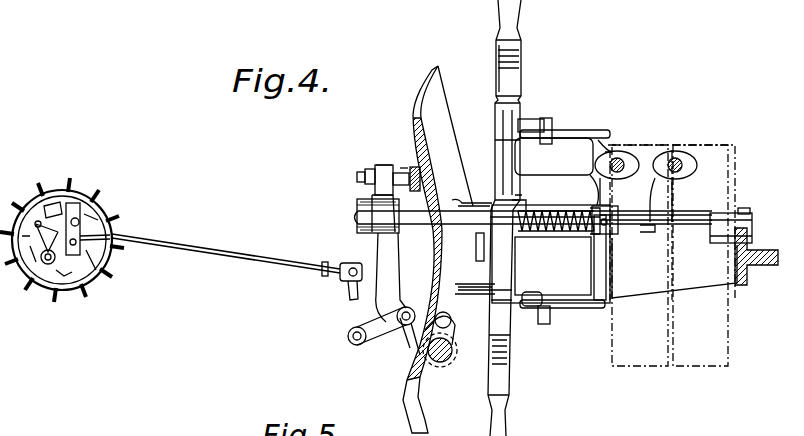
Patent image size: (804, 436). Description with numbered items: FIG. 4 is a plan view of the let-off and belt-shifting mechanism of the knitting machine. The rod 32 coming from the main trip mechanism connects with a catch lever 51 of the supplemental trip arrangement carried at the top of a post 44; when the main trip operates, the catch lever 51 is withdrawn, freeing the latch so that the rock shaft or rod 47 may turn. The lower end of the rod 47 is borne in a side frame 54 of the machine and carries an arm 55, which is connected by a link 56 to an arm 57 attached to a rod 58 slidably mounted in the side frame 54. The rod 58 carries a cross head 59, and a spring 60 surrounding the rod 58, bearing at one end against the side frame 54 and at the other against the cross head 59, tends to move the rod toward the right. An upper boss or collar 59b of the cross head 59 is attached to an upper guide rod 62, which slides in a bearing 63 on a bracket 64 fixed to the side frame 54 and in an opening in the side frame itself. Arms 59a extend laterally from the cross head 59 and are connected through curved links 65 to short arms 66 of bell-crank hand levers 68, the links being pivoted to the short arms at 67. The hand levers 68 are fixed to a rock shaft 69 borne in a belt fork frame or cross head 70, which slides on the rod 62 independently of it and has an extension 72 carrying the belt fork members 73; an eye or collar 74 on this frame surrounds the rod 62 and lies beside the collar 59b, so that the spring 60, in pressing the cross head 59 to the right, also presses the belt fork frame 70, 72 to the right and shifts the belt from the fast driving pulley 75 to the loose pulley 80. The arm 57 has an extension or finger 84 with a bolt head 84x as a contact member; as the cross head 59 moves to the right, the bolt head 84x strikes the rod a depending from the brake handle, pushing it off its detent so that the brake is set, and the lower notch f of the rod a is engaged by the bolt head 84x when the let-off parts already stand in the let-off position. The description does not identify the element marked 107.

The rod 32 is at (266, 266).
The post 44 is at (472, 300).
The rock shaft 47 is at (441, 364).
The catch lever 51 is at (355, 265).
The side frame 54 is at (436, 112).
The arm 55 is at (410, 327).
The link 56 is at (384, 312).
The arm 57 is at (372, 236).
The rod 58 is at (358, 214).
The cross head 59 is at (604, 236).
The arms 59a is at (598, 176).
The upper boss or collar 59b is at (596, 234).
The spring 60 is at (545, 235).
The upper guide rod 62 is at (388, 216).
The bearing 63 is at (726, 216).
The bracket 64 is at (718, 278).
The curved links 65 is at (586, 136).
The short arms 66 is at (530, 124).
The pivotal connection 67 is at (548, 124).
The hand levers 68 is at (510, 28).
The rock shaft 69 is at (560, 152).
The belt fork frame 70 is at (540, 208).
The extension 72 is at (590, 176).
The belt fork members 73 is at (620, 162).
The eye or collar 74 is at (640, 232).
The fast driving pulley 75 is at (637, 366).
The loose pulley 80 is at (698, 366).
The extension or finger 84 is at (378, 192).
The bolt head 84x is at (384, 168).
The arm 107 is at (410, 352).
The lower notch or lip f is at (402, 168).
The rod a is at (415, 167).